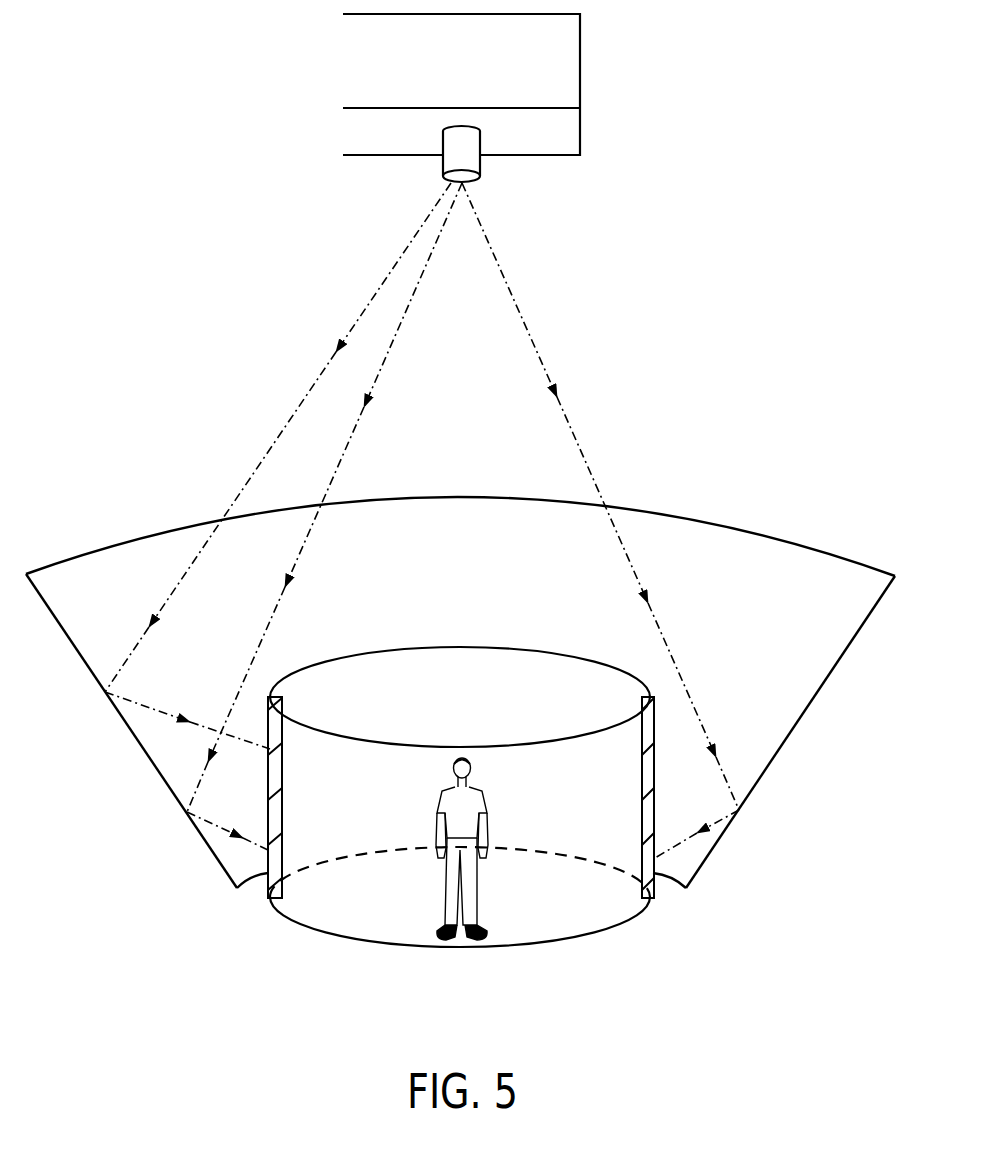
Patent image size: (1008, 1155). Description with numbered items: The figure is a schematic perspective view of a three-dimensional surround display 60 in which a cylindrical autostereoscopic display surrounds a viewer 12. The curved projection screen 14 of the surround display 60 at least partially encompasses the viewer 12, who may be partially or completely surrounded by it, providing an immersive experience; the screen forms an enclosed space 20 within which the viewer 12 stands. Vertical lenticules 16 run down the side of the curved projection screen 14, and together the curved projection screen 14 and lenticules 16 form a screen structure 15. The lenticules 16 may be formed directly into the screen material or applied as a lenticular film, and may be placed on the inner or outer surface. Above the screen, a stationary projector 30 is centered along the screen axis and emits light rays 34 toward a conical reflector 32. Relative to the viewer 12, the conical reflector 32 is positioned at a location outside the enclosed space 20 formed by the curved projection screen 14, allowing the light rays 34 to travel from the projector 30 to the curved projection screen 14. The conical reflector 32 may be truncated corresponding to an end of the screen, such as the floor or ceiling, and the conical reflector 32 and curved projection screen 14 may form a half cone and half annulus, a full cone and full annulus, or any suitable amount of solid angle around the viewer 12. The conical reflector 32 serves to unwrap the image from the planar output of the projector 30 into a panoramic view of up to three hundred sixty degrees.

The 3D surround display 60 is at (172, 67).
The projector 30 is at (580, 82).
The light rays 34 is at (422, 263).
The conical reflector 32 is at (763, 523).
The enclosed space 20 is at (393, 688).
The lenticules 16 is at (268, 873).
The viewer 12 is at (493, 791).
The screen structure 15 is at (309, 930).
The curved projection screen 14 is at (540, 943).